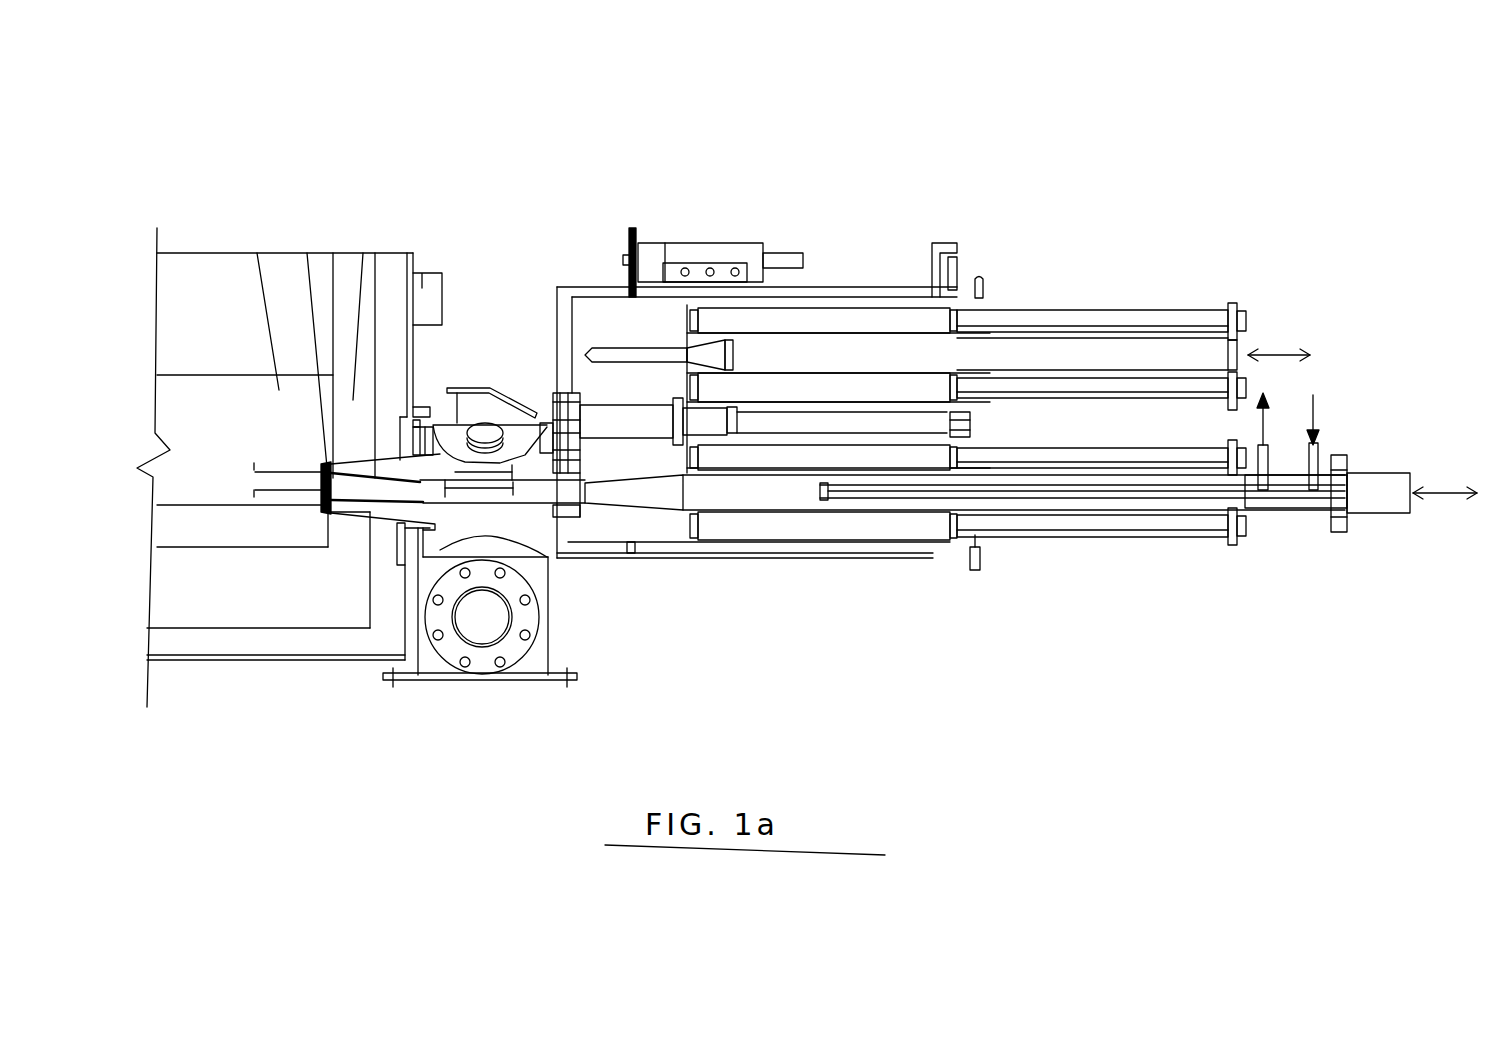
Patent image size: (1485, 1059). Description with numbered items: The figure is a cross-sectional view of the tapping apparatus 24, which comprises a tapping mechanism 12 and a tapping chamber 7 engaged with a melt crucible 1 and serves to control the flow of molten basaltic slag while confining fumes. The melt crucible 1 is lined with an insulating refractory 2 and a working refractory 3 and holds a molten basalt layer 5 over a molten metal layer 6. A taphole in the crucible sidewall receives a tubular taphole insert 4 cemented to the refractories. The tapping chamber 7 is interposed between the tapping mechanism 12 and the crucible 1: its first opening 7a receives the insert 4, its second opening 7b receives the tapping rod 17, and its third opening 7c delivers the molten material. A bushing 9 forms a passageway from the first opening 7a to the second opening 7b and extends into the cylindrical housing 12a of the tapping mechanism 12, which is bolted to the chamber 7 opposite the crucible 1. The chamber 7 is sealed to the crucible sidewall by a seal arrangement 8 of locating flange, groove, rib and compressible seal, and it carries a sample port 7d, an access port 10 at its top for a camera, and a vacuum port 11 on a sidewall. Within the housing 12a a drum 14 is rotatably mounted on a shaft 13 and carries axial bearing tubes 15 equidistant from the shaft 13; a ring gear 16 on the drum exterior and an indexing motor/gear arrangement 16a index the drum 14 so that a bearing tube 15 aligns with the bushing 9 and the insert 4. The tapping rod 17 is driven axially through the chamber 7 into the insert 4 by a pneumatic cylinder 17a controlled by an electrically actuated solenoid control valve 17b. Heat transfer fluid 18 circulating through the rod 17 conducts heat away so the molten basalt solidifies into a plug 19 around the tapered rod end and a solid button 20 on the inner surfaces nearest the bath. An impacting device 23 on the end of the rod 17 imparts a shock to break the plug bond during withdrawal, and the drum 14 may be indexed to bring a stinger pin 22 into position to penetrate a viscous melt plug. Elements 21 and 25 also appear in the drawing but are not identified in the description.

The melt crucible 1 is at (418, 248).
The insulating refractory 2 is at (378, 633).
The working refractory 3 is at (275, 592).
The tubular taphole insert 4 is at (363, 512).
The molten basalt layer 5 is at (279, 390).
The molten metal layer 6 is at (208, 517).
The tapping chamber 7 is at (575, 513).
The first opening 7a is at (397, 517).
The second opening 7b is at (548, 555).
The third opening 7c is at (435, 682).
The sample port 7d is at (463, 645).
The seal 8 is at (425, 400).
The bushing 9 is at (637, 562).
The access port 10 is at (480, 388).
The vacuum port 11 is at (487, 430).
The tapping mechanism 12 is at (813, 283).
The cylindrical housing 12a is at (847, 287).
The shaft 13 is at (930, 420).
The drum 14 is at (883, 297).
The axial bearing tubes 15 is at (903, 513).
The ring gear 16 is at (680, 573).
The indexing motor/gear arrangement 16a is at (637, 232).
The tapping rod 17 is at (1037, 503).
The pneumatic cylinder 17a is at (1137, 310).
The solenoid control valve 17b is at (980, 570).
The heat transfer fluid 18 is at (1105, 500).
The plug 19 is at (353, 400).
The solid button 20 is at (328, 478).
The valve posts 21 is at (1270, 440).
The stinger pin 22 is at (1177, 348).
The impacting device 23 is at (1365, 482).
The tapping apparatus 24 is at (648, 177).
The seal plate 25 is at (415, 363).